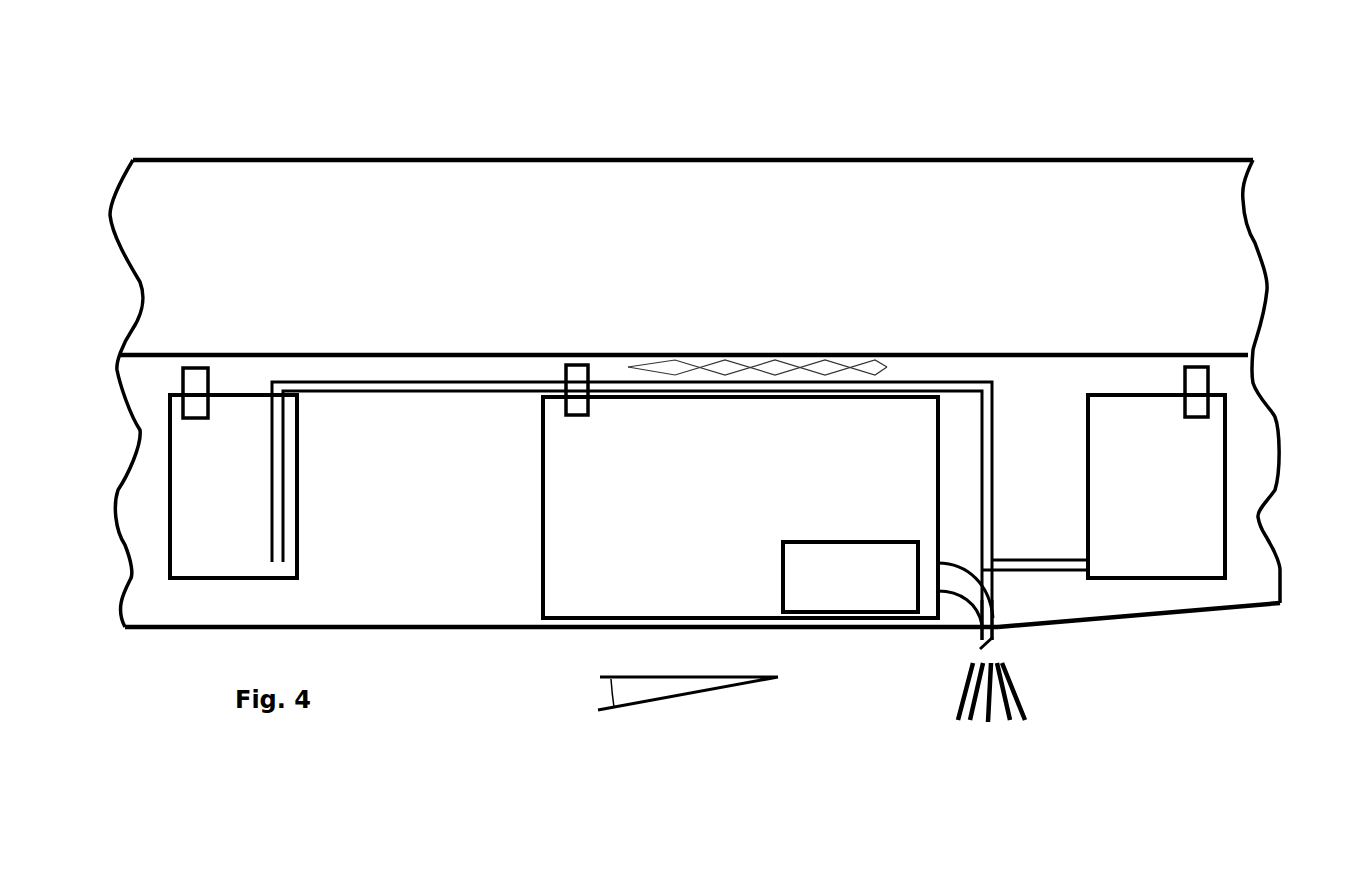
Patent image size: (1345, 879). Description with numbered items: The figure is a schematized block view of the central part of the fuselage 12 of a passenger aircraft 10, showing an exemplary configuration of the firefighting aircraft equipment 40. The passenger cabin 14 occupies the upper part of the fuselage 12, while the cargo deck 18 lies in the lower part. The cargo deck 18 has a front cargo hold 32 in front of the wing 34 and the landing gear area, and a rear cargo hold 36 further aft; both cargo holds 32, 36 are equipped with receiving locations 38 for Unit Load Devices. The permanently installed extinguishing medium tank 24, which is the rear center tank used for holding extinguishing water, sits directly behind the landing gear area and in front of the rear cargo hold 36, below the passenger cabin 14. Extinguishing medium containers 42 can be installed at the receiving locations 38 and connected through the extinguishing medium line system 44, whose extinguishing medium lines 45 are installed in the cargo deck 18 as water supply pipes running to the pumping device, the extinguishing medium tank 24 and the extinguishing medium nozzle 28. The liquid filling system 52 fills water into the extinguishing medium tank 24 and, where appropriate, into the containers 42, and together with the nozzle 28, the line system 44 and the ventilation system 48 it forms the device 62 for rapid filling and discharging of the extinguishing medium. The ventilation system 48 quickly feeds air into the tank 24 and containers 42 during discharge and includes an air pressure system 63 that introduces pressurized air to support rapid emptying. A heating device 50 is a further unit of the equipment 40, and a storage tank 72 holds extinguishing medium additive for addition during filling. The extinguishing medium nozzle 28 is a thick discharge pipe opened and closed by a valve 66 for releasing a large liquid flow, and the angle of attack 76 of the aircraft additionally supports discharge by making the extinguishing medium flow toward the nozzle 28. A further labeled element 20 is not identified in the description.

The passenger aircraft 10 is at (286, 137).
The fuselage 12 is at (600, 156).
The passenger cabin 14 is at (721, 201).
The cargo deck 18 is at (1120, 600).
The inner layer 20 is at (452, 141).
The extinguishing medium tank 24 is at (580, 620).
The extinguishing medium nozzle 28 is at (967, 658).
The front cargo hold 32 is at (157, 603).
The wing 34 is at (424, 498).
The rear cargo hold 36 is at (1230, 608).
The receiving locations 38 is at (210, 603).
The firefighting aircraft equipment 40 is at (1124, 696).
The extinguishing medium container 42 is at (170, 520).
The extinguishing medium line system 44 is at (953, 378).
The extinguishing medium lines 45 is at (438, 380).
The ventilation system 48 is at (195, 368).
The heating device 50 is at (776, 352).
The liquid filling system 52 is at (850, 577).
The device for rapid filling and discharging 62 is at (935, 650).
The air pressure system 63 is at (561, 352).
The valve 66 is at (1000, 650).
The storage tank for extinguishing medium additive 72 is at (997, 616).
The angle of attack 76 is at (630, 705).